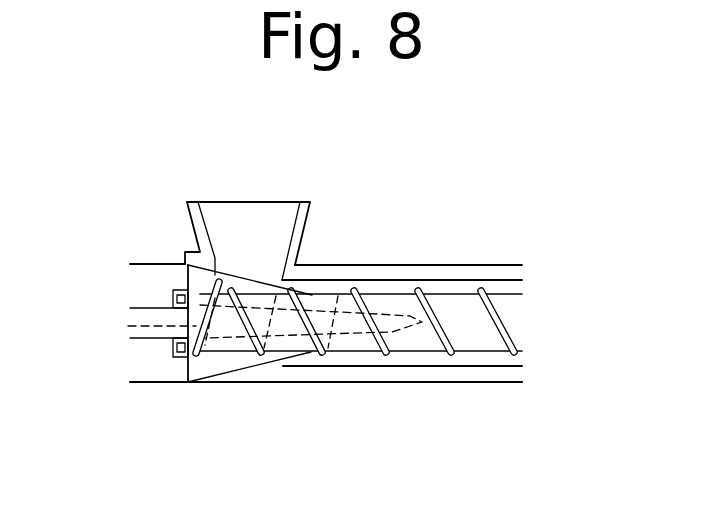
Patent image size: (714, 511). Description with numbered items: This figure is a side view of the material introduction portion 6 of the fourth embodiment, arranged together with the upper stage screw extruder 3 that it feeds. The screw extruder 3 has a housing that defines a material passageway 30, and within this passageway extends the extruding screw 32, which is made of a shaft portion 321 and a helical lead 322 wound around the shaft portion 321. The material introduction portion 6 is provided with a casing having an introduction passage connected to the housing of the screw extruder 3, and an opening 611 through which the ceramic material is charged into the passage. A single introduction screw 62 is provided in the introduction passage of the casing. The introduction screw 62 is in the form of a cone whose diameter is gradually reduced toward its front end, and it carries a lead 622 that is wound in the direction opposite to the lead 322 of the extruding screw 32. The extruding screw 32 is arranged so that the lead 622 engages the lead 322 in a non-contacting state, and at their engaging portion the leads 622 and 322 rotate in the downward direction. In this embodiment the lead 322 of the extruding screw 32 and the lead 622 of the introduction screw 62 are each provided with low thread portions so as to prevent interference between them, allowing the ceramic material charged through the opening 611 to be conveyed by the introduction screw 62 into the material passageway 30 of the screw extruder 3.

The screw extruder 3 is at (487, 371).
The material passageway 30 is at (512, 282).
The extruding screw 32 is at (454, 301).
The shaft portion 321 is at (483, 330).
The helical lead 322 is at (440, 343).
The material introduction portion 6 is at (322, 225).
The opening 611 is at (254, 277).
The introduction screw 62 is at (128, 326).
The lead 622 is at (202, 352).